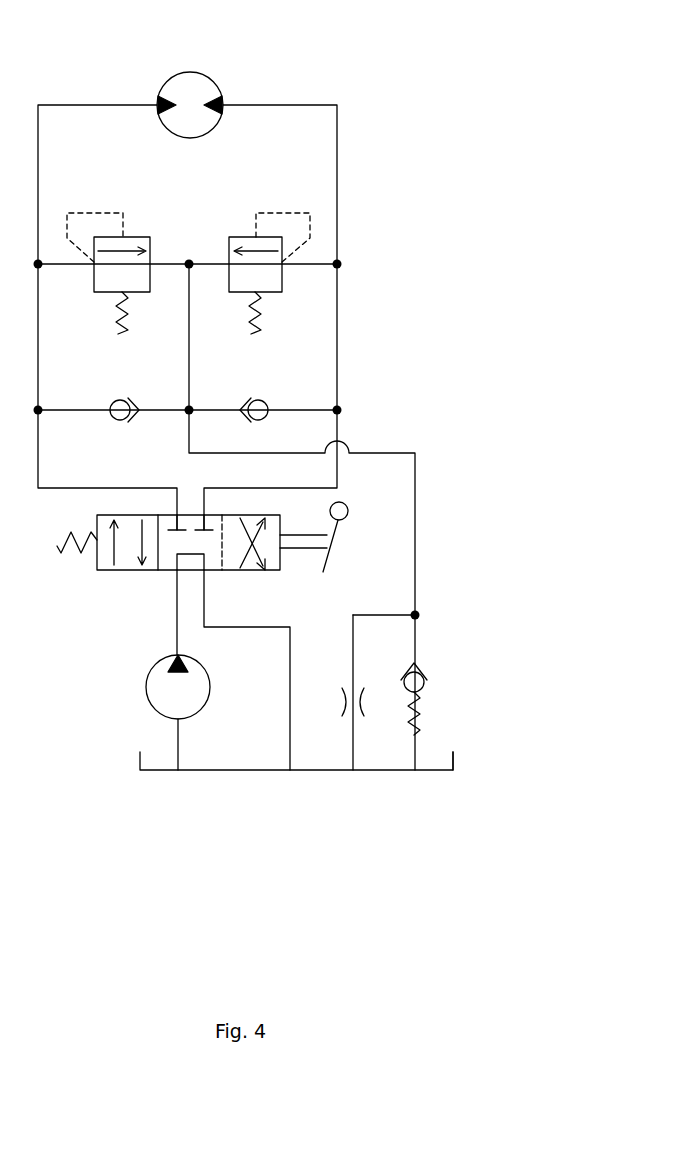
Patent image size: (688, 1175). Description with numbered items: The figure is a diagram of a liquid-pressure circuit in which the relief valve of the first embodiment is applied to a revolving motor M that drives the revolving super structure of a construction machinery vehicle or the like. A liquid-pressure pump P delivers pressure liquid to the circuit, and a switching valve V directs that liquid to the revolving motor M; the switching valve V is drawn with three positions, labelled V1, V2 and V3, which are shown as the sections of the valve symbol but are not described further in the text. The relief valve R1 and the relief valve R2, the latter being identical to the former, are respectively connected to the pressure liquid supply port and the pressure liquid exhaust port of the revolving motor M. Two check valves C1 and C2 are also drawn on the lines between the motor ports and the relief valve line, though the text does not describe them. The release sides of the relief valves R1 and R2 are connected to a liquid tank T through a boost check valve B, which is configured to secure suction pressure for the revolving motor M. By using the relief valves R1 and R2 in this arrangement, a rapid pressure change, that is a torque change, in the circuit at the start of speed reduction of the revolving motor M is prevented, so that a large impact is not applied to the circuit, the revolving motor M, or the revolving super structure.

The revolving motor M is at (190, 72).
The relief valve R1 is at (138, 235).
The relief valve R2 is at (240, 235).
The first check valve C1 is at (124, 393).
The second check valve C2 is at (256, 393).
The switching valve V is at (189, 569).
The first valve position V1 is at (103, 572).
The second valve position (neutral) V2 is at (213, 572).
The third valve position V3 is at (270, 572).
The liquid-pressure pump P is at (146, 695).
The boost check valve B is at (428, 700).
The liquid tank T is at (455, 757).